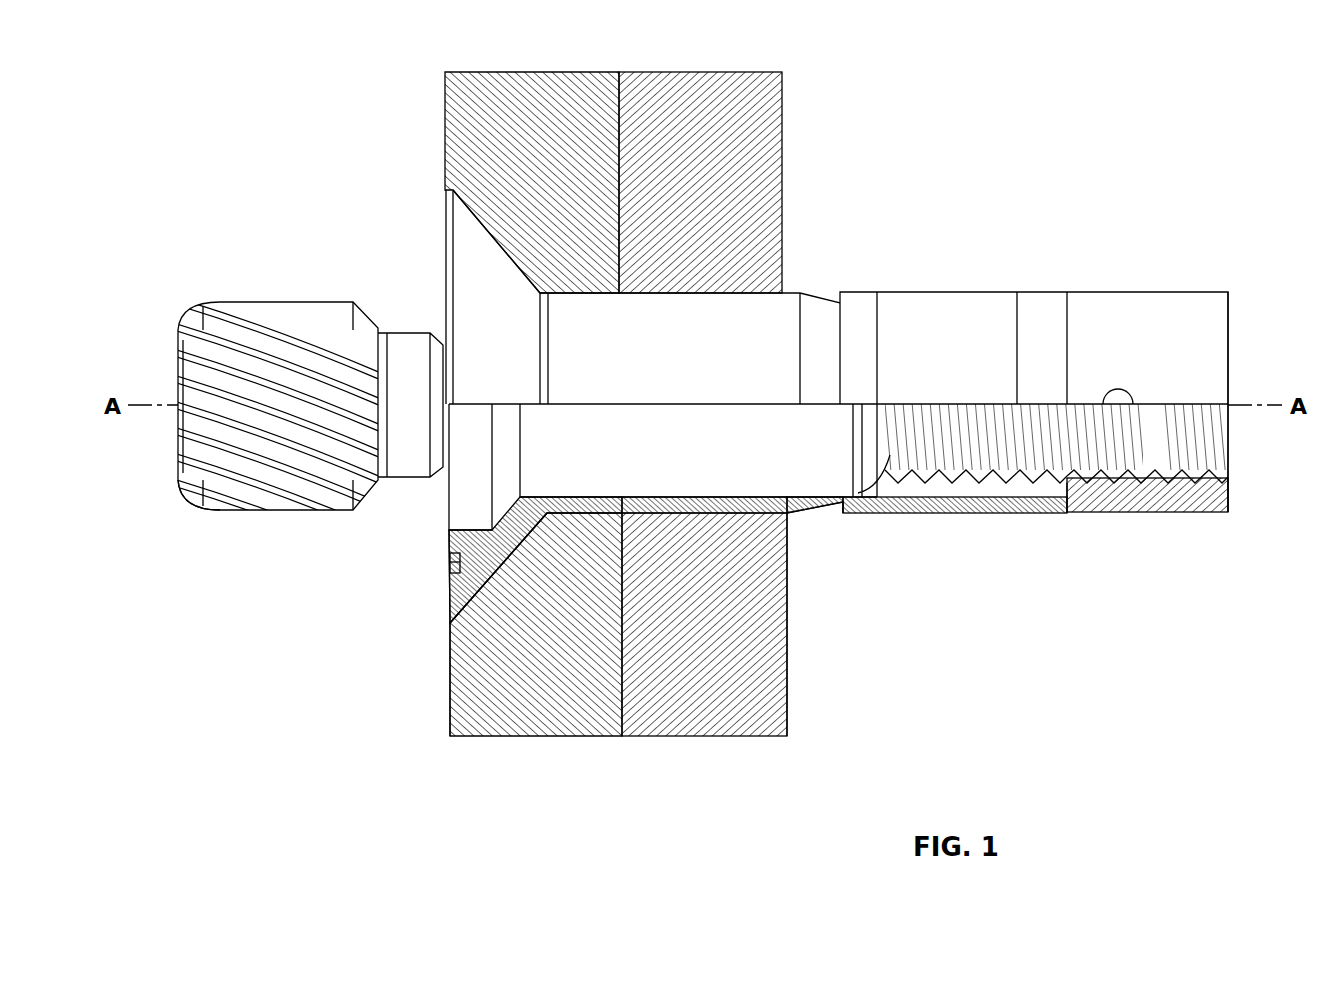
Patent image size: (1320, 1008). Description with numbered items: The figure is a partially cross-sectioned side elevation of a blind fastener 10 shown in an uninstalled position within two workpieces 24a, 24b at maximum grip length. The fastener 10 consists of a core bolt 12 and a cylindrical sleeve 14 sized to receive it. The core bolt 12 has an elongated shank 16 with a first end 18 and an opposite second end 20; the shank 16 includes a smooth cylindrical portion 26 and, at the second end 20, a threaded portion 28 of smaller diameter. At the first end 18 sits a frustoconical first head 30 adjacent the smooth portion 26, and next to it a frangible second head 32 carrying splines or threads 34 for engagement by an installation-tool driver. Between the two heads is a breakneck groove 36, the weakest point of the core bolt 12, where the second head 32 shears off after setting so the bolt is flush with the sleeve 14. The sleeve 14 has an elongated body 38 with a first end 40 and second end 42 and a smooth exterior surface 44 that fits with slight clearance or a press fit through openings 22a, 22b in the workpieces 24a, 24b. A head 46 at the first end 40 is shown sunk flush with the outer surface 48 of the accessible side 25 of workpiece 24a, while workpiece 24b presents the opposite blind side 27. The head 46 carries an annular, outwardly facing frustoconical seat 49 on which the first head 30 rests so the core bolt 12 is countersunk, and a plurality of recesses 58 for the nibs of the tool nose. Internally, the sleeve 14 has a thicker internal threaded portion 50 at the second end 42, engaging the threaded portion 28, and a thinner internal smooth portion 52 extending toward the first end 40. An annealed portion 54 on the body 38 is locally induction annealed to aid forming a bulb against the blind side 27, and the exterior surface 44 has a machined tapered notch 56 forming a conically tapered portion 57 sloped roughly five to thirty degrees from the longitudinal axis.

The blind fastener 10 is at (890, 246).
The core bolt 12 is at (789, 432).
The cylindrical sleeve 14 is at (1128, 286).
The elongated shank 16 is at (750, 470).
The first end 18 is at (452, 517).
The second end 20 is at (1210, 500).
The opening 22a is at (600, 515).
The opening 22b is at (662, 515).
The workpiece 24a is at (500, 722).
The workpiece 24b is at (725, 722).
The accessible side 25 is at (450, 706).
The smooth cylindrical portion 26 is at (681, 420).
The blind side 27 is at (788, 677).
The threaded portion 28 is at (1042, 475).
The first head 30 is at (452, 490).
The second head 32 is at (292, 508).
The splines or threads 34 is at (250, 350).
The breakneck groove 36 is at (440, 360).
The elongated body 38 is at (732, 295).
The first end 40 is at (447, 250).
The second end 42 is at (1226, 290).
The smooth exterior surface 44 is at (683, 338).
The head 46 is at (466, 225).
The outer surface 48 is at (512, 266).
The seat 49 is at (518, 547).
The internal threaded portion 50 is at (1145, 478).
The internal smooth portion 52 is at (985, 514).
The annealed portion 54 is at (968, 305).
The tapered notch 56 is at (836, 514).
The conically tapered portion 57 is at (808, 512).
The recesses 58 is at (450, 565).